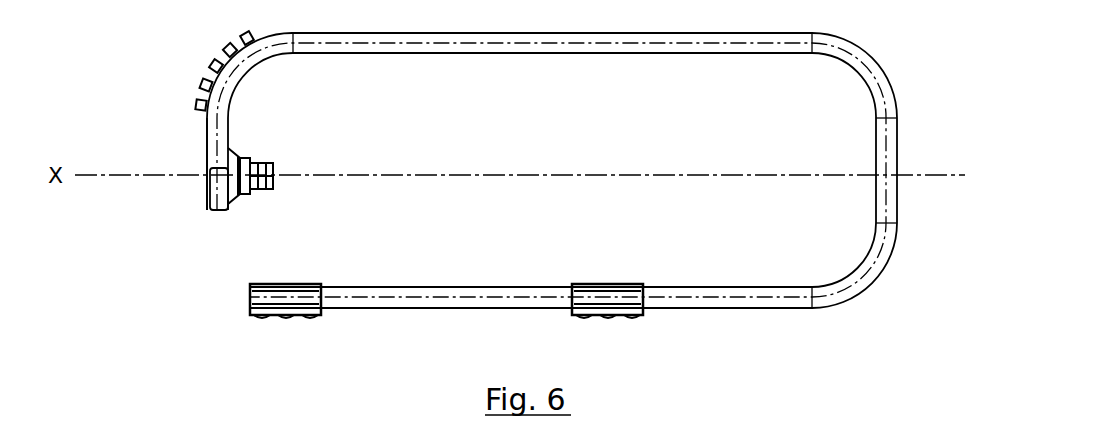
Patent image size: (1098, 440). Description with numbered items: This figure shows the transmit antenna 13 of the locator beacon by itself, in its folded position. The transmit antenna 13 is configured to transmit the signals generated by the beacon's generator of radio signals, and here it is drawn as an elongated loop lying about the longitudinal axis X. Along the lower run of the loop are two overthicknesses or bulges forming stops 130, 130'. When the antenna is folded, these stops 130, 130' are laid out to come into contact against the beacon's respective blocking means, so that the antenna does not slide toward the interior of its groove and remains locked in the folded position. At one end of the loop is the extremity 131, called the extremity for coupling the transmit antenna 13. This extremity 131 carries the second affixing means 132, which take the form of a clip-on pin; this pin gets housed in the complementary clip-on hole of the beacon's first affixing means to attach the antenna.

The transmit antenna 13 is at (926, 137).
The stop 130 is at (280, 332).
The stop 130' is at (600, 332).
The extremity for coupling 131 is at (208, 207).
The second affixing means 132 is at (276, 165).